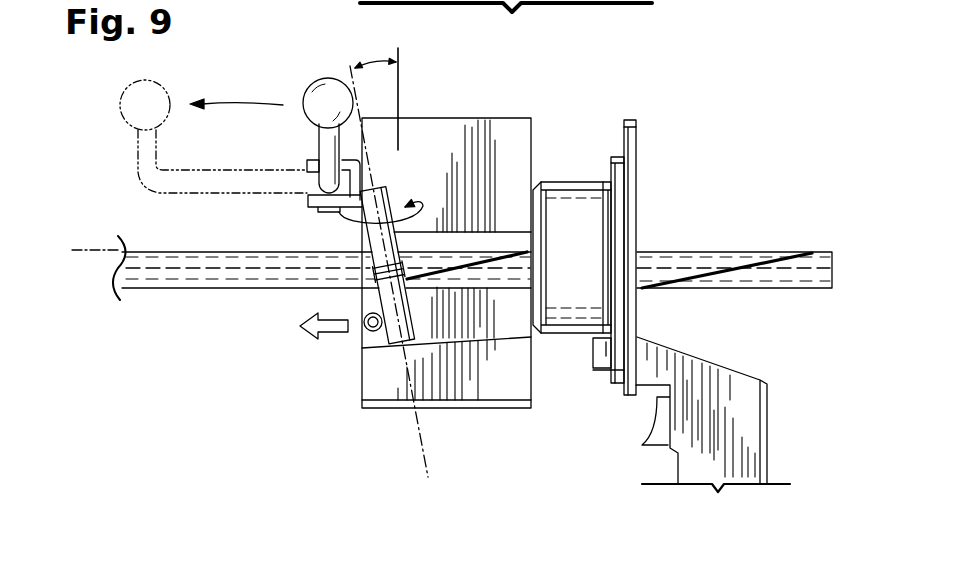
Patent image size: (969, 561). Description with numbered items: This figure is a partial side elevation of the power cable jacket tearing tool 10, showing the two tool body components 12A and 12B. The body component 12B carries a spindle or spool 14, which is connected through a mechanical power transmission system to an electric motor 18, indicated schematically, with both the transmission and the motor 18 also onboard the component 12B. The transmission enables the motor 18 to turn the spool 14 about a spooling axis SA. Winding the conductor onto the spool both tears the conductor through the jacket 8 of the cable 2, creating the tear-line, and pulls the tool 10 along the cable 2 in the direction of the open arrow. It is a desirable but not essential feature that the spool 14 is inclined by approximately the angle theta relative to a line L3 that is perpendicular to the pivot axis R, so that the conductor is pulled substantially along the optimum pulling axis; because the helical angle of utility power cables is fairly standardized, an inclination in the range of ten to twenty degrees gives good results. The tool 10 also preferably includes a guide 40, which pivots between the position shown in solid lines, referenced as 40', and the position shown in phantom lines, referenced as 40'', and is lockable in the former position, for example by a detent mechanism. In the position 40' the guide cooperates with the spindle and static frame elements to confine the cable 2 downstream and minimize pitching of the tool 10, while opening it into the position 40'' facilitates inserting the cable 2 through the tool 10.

The cable 2 is at (690, 252).
The jacket 8 is at (198, 272).
The tool 10 is at (752, 125).
The tool body component 12A is at (618, 438).
The tool body component 12B is at (482, 100).
The spindle or spool 14 is at (370, 223).
The electric motor 18 is at (531, 142).
The guide 40 is at (281, 114).
The guide position (solid lines) 40' is at (296, 135).
The guide position (phantom lines) 40'' is at (192, 136).
The spooling axis SA is at (348, 66).
The line perpendicular to the pivot axis L3 is at (400, 103).
The pivot axis R is at (78, 249).